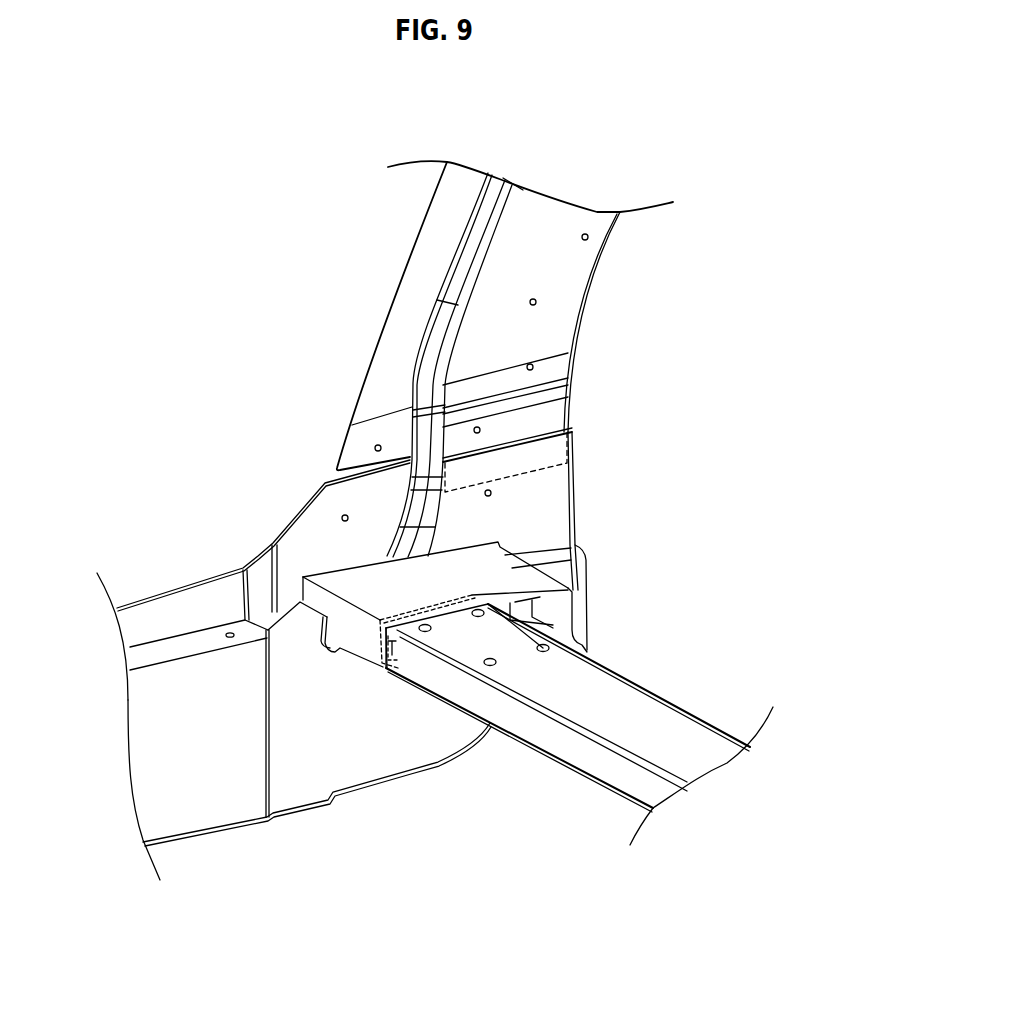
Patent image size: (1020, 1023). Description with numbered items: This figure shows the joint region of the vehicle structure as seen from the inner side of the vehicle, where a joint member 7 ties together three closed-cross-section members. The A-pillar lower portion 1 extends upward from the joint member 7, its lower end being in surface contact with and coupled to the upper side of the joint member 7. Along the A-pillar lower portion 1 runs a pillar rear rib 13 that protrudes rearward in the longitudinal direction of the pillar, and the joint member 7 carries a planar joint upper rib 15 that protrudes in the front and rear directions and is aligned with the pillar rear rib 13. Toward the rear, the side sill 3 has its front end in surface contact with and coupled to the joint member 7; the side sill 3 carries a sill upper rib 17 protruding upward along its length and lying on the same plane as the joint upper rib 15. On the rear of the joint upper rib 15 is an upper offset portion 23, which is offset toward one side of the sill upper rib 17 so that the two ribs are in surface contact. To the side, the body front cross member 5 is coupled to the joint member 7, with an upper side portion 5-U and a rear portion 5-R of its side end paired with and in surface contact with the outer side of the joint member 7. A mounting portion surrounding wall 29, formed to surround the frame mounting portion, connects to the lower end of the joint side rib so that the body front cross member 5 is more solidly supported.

The A-pillar lower portion 1 is at (563, 267).
The pillar rear rib 13 is at (407, 310).
The joint member 7 is at (538, 512).
The mounting portion surrounding wall 29 is at (580, 637).
The joint upper rib 15 is at (320, 530).
The upper offset portion 23 is at (265, 569).
The sill upper rib 17 is at (168, 617).
The side sill 3 is at (202, 805).
The body front cross member 5 is at (638, 715).
The upper side portion 5-U is at (436, 610).
The rear portion 5-R is at (390, 667).